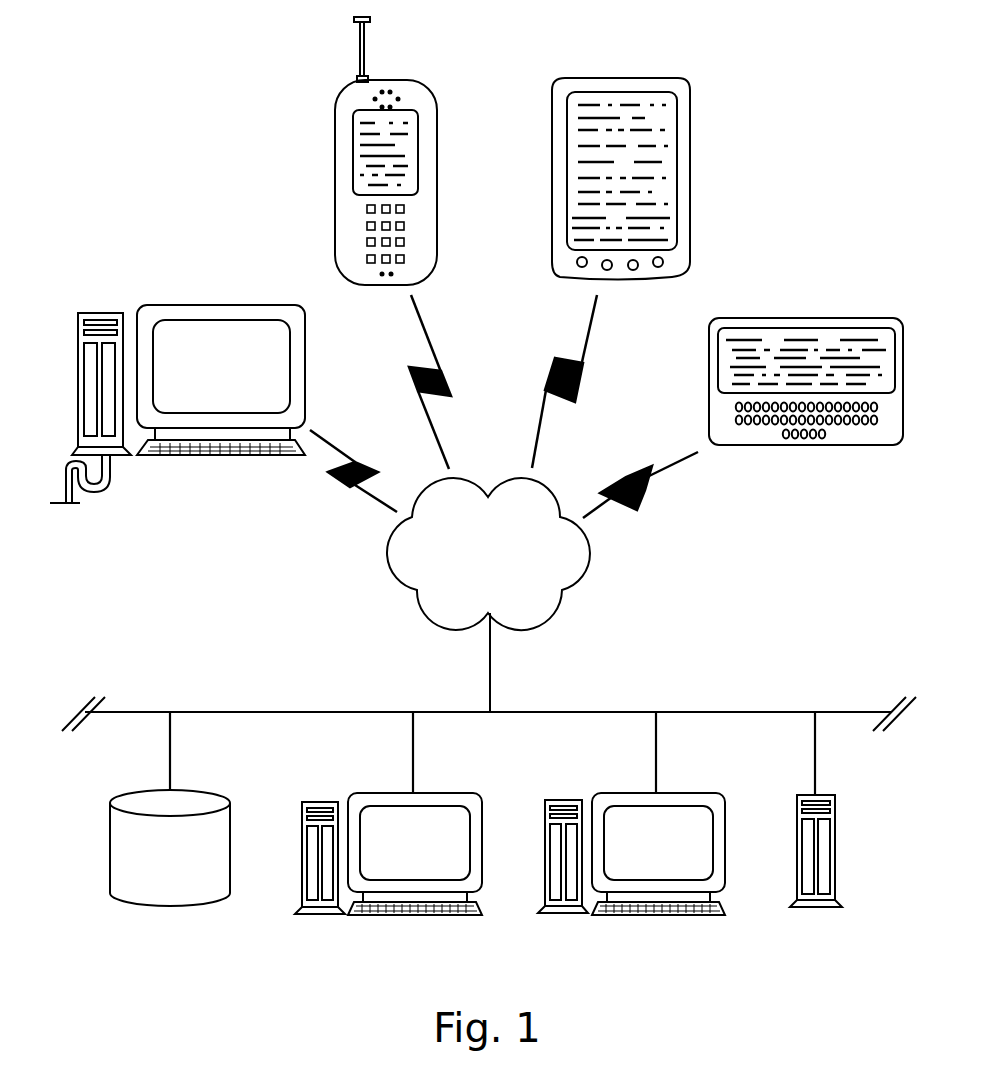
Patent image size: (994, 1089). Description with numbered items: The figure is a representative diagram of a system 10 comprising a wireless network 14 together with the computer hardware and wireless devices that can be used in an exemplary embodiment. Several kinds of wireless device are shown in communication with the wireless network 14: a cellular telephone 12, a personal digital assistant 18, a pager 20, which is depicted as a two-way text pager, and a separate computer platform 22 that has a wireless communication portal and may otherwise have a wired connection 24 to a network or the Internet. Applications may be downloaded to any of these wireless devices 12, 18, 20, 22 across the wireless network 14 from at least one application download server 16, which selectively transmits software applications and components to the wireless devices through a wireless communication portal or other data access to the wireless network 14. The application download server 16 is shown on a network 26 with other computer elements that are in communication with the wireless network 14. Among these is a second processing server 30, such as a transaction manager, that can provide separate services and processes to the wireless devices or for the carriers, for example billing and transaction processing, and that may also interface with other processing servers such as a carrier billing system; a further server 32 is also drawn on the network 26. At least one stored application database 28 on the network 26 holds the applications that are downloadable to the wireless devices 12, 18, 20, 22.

The communication system 10 is at (808, 156).
The cellular telephone 12 is at (415, 82).
The wireless network 14 is at (590, 553).
The application download server 16 is at (388, 793).
The personal digital assistant 18 is at (623, 78).
The pager 20 is at (838, 445).
The computer platform 22 is at (212, 305).
The wired connection 24 is at (118, 492).
The network 26 is at (703, 712).
The stored application database 28 is at (110, 847).
The second processing server 30 is at (637, 793).
The server 32 is at (835, 827).